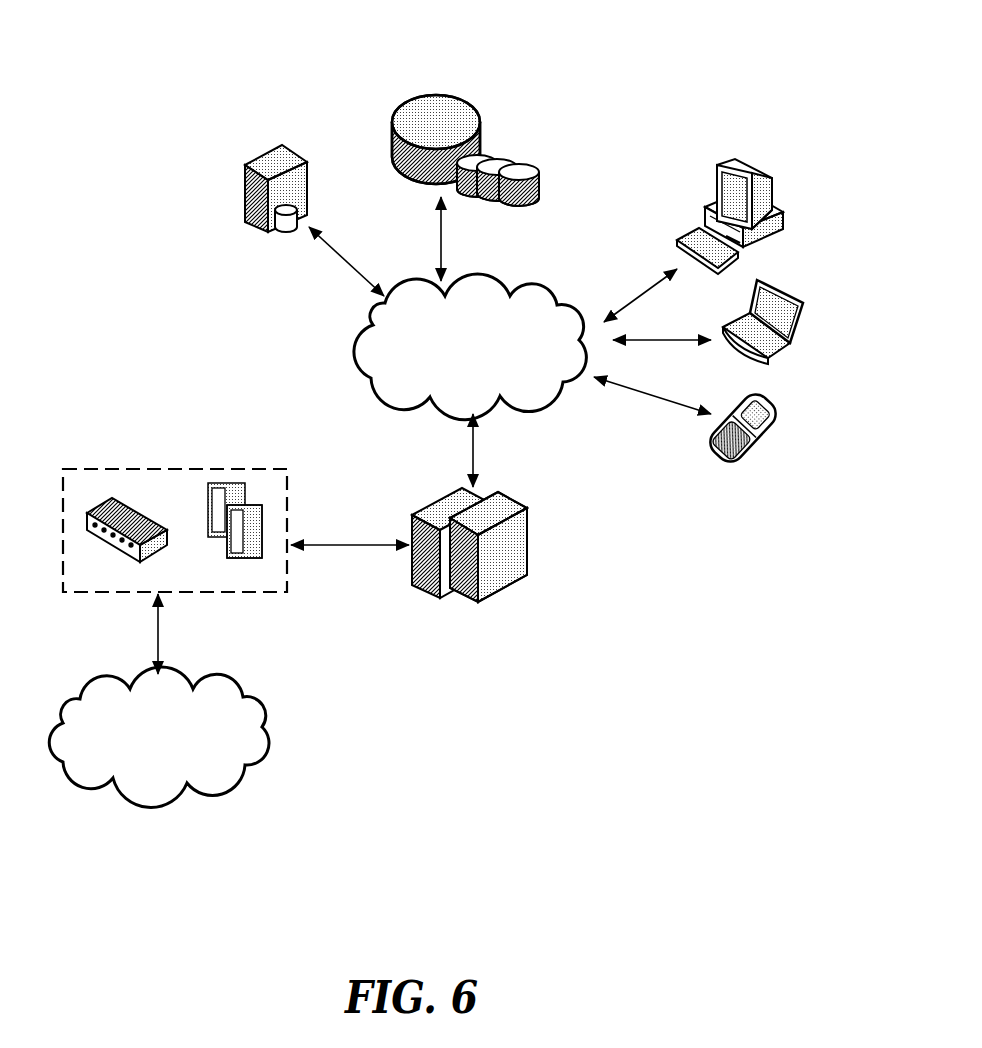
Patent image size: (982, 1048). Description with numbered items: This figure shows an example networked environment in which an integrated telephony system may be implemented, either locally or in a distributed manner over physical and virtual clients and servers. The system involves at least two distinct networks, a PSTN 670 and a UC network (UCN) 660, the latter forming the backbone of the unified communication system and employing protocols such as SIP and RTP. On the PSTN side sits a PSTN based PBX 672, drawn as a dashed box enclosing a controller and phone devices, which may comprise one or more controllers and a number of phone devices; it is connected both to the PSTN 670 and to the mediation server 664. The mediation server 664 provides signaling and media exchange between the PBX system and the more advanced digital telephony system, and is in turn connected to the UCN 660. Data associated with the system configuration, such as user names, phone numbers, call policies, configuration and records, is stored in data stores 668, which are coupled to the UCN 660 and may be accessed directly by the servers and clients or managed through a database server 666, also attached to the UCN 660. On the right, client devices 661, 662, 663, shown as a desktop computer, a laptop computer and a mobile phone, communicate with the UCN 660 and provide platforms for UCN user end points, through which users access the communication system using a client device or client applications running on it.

The UC network (UCN) 660 is at (481, 267).
The client device 661 is at (771, 149).
The client device 662 is at (807, 276).
The client device 663 is at (779, 391).
The mediation server 664 is at (456, 618).
The database server 666 is at (282, 240).
The data stores 668 is at (453, 71).
The PSTN 670 is at (116, 796).
The PBX 672 is at (119, 464).